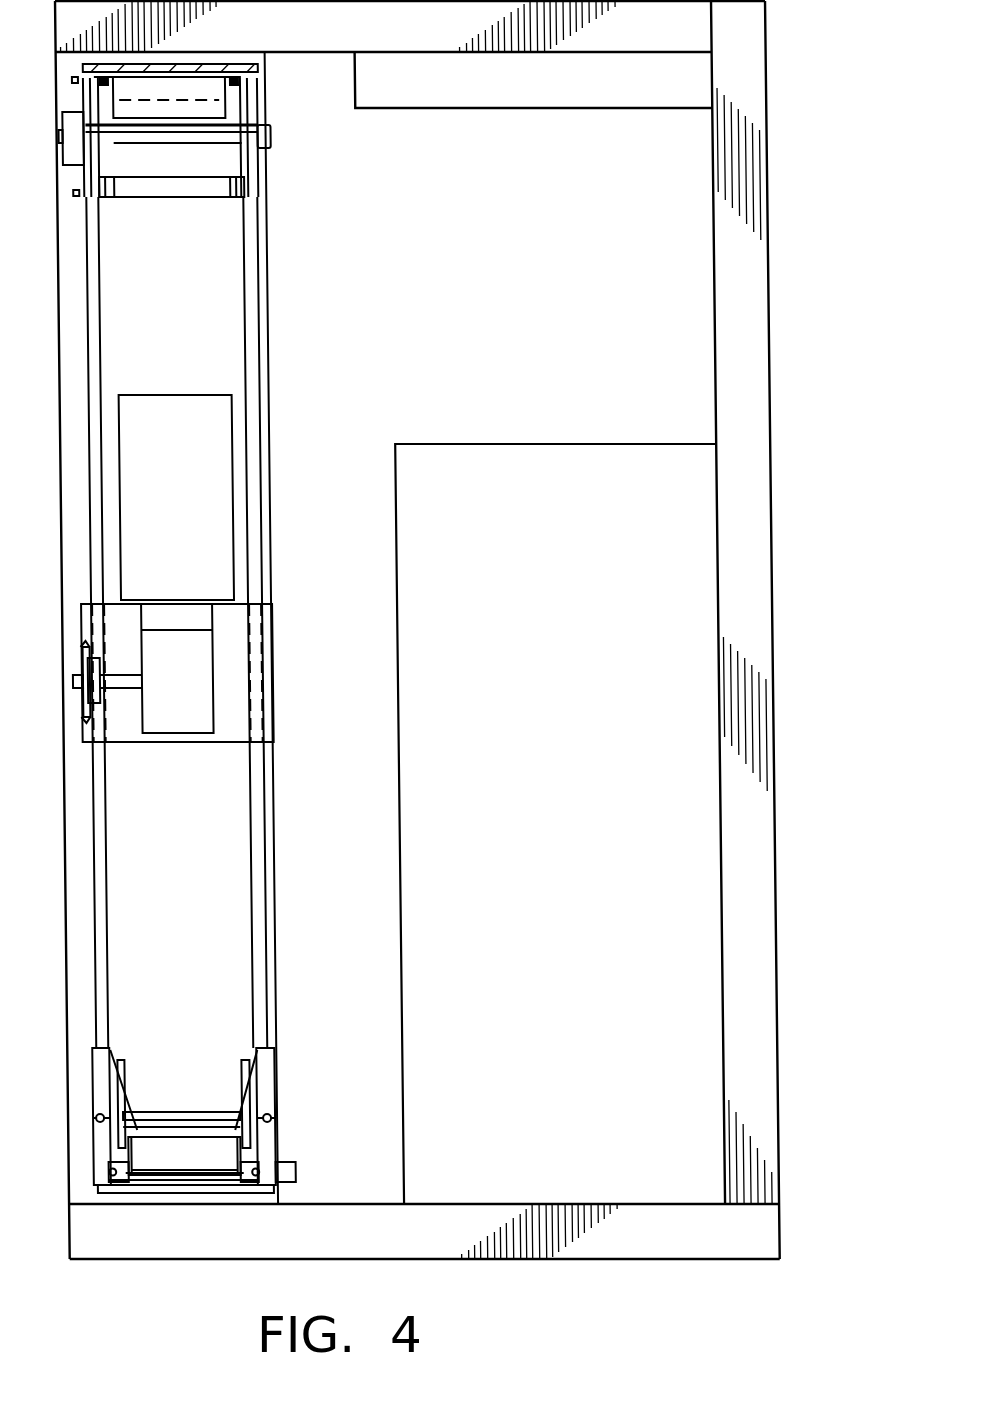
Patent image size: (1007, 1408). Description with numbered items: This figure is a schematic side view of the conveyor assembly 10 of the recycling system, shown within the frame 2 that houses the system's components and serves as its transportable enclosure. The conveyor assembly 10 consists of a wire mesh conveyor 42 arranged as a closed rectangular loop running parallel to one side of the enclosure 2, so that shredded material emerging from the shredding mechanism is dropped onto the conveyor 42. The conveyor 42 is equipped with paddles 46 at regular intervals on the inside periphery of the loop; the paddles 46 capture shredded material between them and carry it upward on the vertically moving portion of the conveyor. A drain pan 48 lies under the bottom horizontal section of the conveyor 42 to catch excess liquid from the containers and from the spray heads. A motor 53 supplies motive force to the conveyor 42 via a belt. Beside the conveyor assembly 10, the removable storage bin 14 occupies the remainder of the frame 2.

The frame 2 is at (745, 62).
The conveyor assembly 10 is at (287, 137).
The removable storage bin 14 is at (673, 582).
The wire mesh conveyor 42 is at (151, 1175).
The paddles 46 is at (208, 1150).
The drain pan 48 is at (213, 1182).
The motor 53 is at (205, 477).